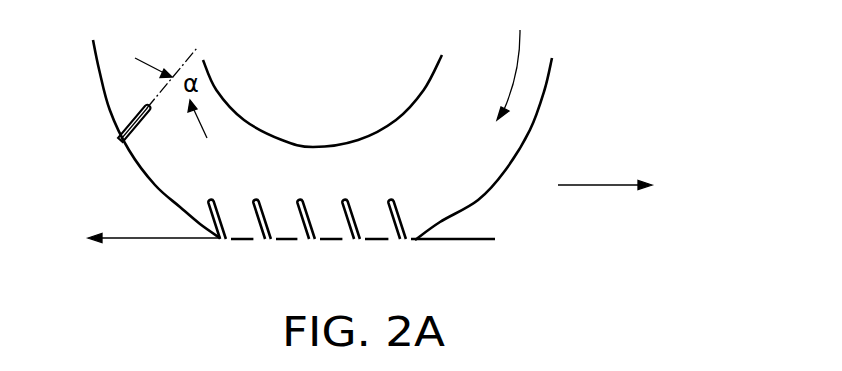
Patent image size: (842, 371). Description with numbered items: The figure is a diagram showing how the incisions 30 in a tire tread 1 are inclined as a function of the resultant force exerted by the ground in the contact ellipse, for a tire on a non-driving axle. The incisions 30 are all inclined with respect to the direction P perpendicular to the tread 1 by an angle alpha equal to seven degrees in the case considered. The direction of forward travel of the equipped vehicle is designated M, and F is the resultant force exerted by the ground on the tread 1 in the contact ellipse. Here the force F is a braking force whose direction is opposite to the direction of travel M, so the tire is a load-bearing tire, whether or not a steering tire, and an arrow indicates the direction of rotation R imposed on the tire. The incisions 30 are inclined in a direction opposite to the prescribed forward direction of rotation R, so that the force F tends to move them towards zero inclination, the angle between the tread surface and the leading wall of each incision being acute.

The tread 1 is at (528, 108).
The incisions 30 is at (390, 201).
The direction perpendicular to the tread P is at (122, 137).
The direction of rotation R is at (504, 75).
The direction of forward travel M is at (605, 166).
The resultant force F is at (154, 259).